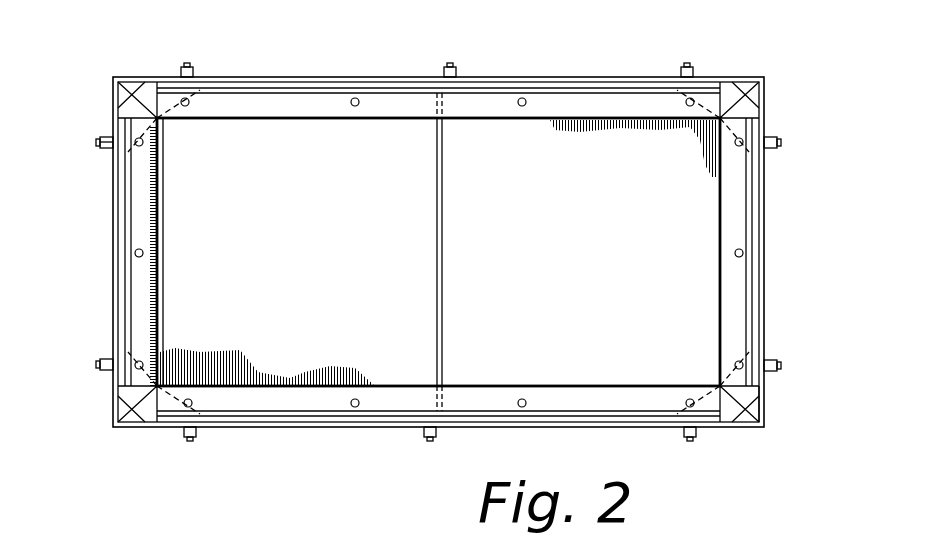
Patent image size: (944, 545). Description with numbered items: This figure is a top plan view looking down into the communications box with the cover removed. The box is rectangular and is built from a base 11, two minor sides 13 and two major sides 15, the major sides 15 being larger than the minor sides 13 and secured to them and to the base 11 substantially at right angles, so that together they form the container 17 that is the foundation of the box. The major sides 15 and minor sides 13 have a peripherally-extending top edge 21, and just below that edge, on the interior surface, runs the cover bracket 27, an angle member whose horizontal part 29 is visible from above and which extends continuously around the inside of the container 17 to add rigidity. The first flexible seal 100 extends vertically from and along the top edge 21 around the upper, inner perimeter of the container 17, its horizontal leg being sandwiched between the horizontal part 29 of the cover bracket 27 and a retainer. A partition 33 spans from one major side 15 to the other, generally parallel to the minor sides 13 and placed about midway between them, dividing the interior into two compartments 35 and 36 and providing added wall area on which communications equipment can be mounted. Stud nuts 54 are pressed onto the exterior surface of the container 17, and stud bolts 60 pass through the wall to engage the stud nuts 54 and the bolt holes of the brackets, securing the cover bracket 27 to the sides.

The first flexible seal 100 is at (300, 87).
The base 11 is at (530, 276).
The minor sides 13 is at (765, 302).
The major sides 15 is at (305, 428).
The container 17 is at (777, 414).
The peripherally-extending top edge 21 is at (762, 110).
The cover bracket 27 is at (238, 103).
The horizontal part 29 is at (313, 118).
The partition 33 is at (443, 203).
The compartment 35 is at (198, 287).
The compartment 36 is at (688, 210).
The stud nut 54 is at (105, 147).
The stud bolt 60 is at (100, 140).